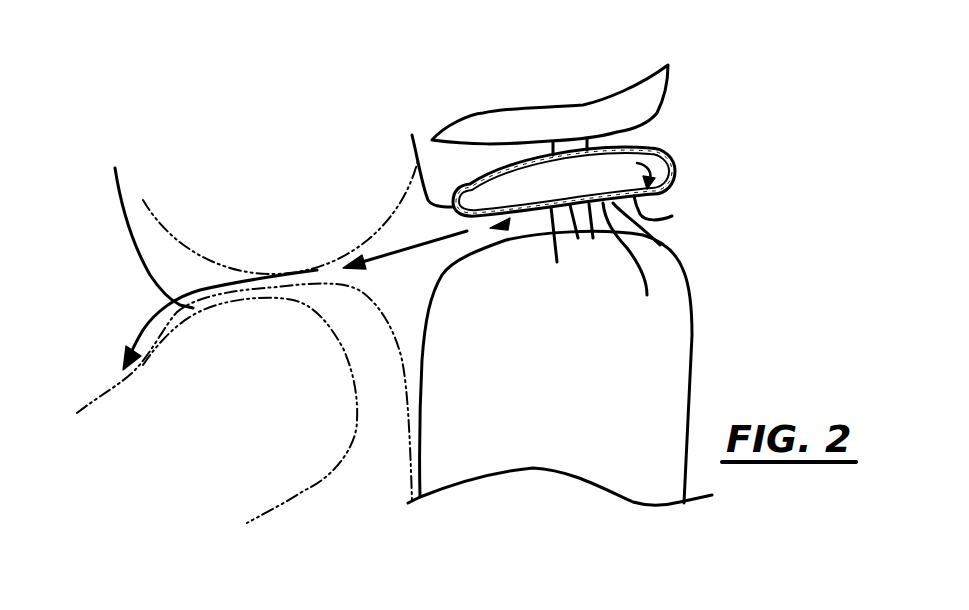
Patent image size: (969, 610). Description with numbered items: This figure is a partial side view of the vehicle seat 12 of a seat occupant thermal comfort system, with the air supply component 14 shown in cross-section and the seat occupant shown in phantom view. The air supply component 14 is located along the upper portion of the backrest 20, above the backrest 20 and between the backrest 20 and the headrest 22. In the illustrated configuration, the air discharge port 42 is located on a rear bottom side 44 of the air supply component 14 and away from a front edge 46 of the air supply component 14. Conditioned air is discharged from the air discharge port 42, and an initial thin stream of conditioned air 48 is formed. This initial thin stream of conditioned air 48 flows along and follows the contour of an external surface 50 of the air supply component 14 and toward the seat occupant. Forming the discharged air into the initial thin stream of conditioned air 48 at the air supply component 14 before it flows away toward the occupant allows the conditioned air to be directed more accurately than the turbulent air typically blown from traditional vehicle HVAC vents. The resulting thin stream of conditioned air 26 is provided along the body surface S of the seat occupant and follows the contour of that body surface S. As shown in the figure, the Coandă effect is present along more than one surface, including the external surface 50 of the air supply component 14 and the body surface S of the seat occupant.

The seat 12 is at (745, 357).
The air supply component 14 is at (660, 148).
The backrest 20 is at (675, 302).
The headrest 22 is at (627, 102).
The thin stream of conditioned air 26 is at (153, 308).
The air discharge port 42 is at (647, 295).
The rear bottom side 44 is at (673, 215).
The front edge 46 is at (412, 156).
The initial thin stream of conditioned air 48 is at (580, 235).
The external surface 50 is at (557, 262).
The body surface S is at (144, 221).